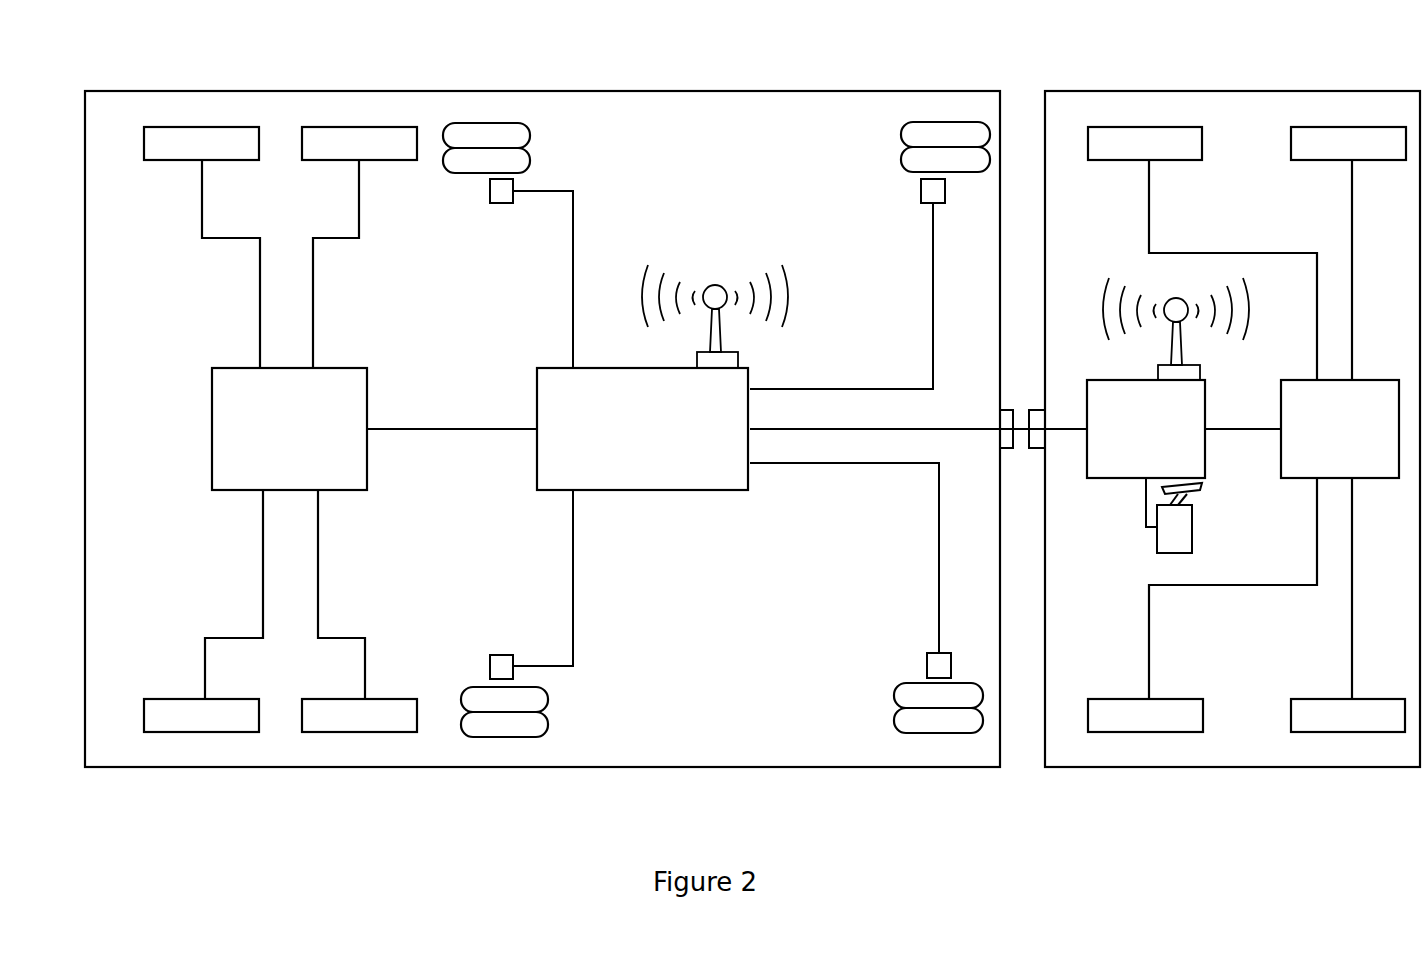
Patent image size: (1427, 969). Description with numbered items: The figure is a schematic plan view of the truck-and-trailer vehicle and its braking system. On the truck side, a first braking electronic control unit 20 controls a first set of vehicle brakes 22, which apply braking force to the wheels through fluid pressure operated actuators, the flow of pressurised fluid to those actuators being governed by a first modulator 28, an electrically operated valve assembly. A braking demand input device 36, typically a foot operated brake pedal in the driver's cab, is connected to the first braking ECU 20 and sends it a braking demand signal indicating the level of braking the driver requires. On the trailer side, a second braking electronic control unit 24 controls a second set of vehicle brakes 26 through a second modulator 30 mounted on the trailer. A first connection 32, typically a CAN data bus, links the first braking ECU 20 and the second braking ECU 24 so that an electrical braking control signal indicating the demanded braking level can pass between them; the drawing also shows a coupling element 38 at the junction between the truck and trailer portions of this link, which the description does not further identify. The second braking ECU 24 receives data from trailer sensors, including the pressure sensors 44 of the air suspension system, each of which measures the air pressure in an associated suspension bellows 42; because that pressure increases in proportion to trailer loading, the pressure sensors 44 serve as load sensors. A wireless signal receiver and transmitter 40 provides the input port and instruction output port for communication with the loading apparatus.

The first braking electronic control unit 20 is at (1168, 378).
The first set of vehicle brakes 22 is at (1164, 135).
The second braking electronic control unit 24 is at (642, 429).
The second set of vehicle brakes 26 is at (195, 138).
The first modulator 28 is at (1340, 429).
The second modulator 30 is at (289, 429).
The first connection 32 is at (818, 431).
The braking demand input device 36 is at (1163, 537).
The trailer connector 38 is at (1173, 355).
The wireless signal receiver 40 is at (722, 340).
The suspension bellows 42 is at (927, 135).
The pressure sensors 44 is at (505, 190).